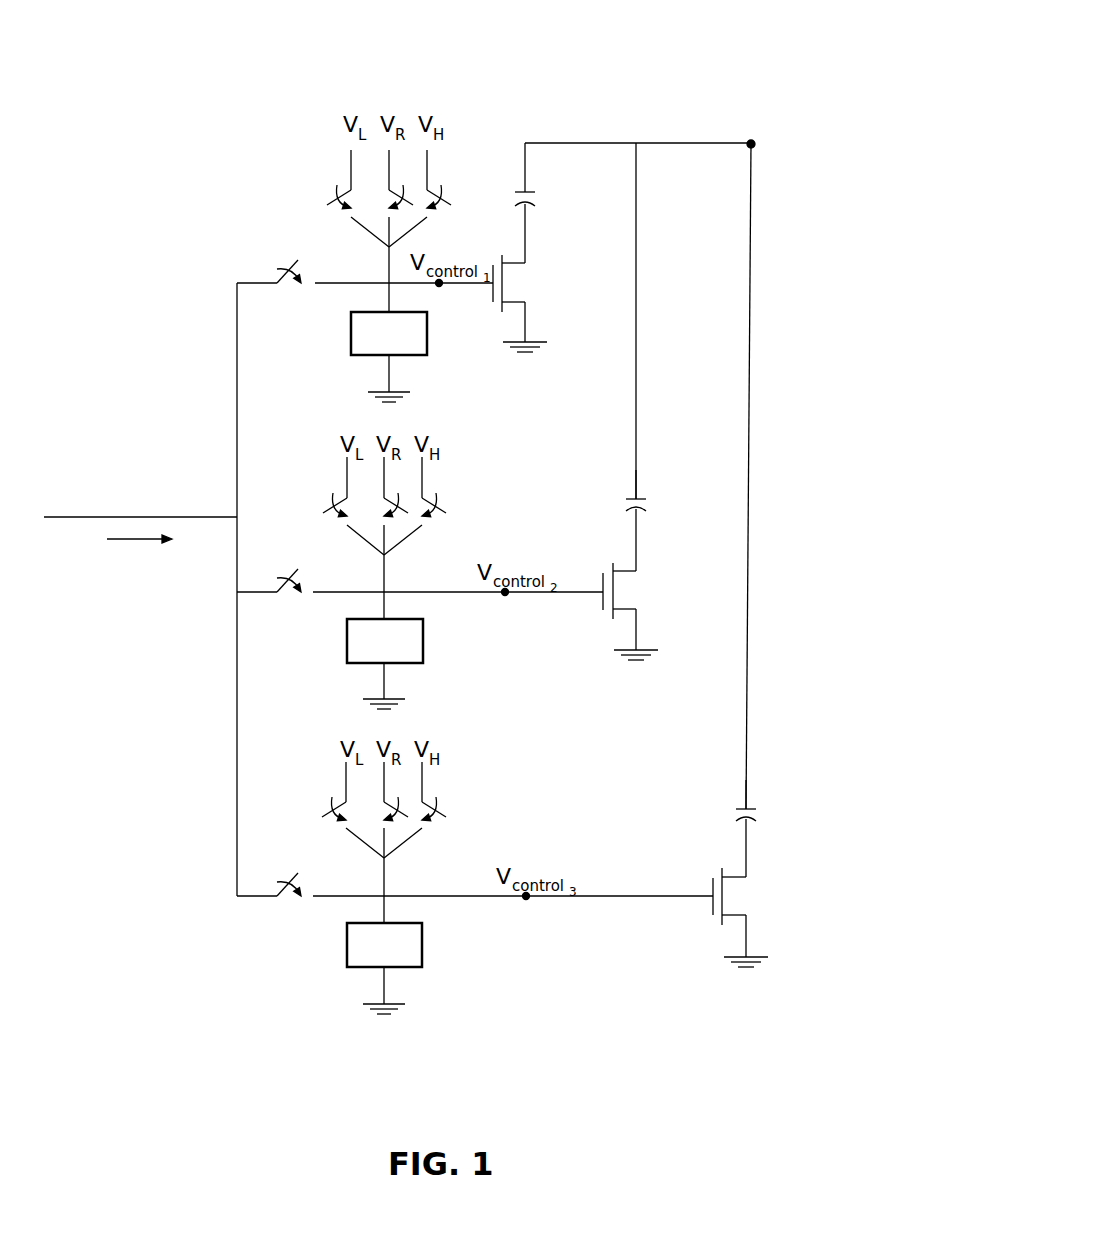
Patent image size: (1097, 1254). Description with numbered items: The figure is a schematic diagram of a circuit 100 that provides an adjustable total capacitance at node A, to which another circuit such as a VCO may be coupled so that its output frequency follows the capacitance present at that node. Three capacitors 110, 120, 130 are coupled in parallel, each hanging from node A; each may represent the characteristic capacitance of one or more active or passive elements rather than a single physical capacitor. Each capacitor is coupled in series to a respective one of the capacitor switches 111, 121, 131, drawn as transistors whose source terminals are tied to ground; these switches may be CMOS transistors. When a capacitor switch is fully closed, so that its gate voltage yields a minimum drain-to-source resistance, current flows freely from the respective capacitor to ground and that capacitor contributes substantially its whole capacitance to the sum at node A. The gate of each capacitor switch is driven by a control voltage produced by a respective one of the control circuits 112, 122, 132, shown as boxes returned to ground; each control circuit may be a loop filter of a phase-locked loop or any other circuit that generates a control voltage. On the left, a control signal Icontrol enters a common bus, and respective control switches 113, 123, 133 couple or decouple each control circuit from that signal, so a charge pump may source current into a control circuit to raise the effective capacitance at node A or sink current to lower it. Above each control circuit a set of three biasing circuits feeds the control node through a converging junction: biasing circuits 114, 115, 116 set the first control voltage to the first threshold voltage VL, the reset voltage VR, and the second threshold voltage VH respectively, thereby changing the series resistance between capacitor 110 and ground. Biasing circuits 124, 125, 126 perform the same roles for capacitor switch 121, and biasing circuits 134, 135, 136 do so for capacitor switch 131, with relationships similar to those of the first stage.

The circuit 100 is at (760, 80).
The capacitor 110 is at (545, 203).
The capacitor switch 111 is at (525, 303).
The control circuit 112 is at (410, 357).
The control switch 113 is at (365, 284).
The biasing circuit 114 is at (345, 198).
The biasing circuit 115 is at (385, 198).
The biasing circuit 116 is at (432, 198).
The capacitor 120 is at (655, 520).
The capacitor switch 121 is at (635, 611).
The control circuit 122 is at (407, 664).
The control switch 123 is at (420, 594).
The biasing circuit 124 is at (341, 506).
The biasing circuit 125 is at (380, 506).
The biasing circuit 126 is at (428, 506).
The capacitor 130 is at (766, 828).
The capacitor switch 131 is at (746, 917).
The control circuit 132 is at (405, 968).
The control switch 133 is at (475, 897).
The biasing circuit 134 is at (341, 810).
The biasing circuit 135 is at (381, 810).
The biasing circuit 136 is at (424, 810).